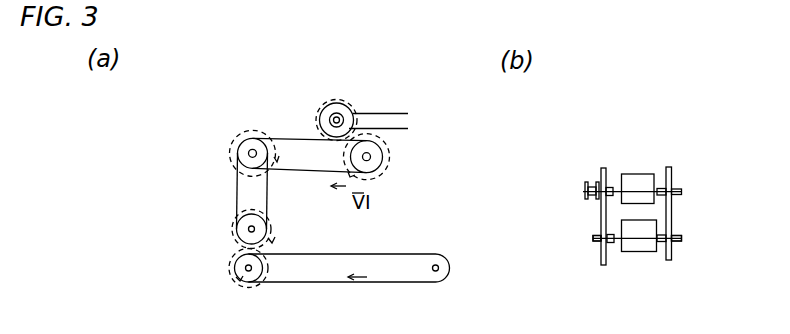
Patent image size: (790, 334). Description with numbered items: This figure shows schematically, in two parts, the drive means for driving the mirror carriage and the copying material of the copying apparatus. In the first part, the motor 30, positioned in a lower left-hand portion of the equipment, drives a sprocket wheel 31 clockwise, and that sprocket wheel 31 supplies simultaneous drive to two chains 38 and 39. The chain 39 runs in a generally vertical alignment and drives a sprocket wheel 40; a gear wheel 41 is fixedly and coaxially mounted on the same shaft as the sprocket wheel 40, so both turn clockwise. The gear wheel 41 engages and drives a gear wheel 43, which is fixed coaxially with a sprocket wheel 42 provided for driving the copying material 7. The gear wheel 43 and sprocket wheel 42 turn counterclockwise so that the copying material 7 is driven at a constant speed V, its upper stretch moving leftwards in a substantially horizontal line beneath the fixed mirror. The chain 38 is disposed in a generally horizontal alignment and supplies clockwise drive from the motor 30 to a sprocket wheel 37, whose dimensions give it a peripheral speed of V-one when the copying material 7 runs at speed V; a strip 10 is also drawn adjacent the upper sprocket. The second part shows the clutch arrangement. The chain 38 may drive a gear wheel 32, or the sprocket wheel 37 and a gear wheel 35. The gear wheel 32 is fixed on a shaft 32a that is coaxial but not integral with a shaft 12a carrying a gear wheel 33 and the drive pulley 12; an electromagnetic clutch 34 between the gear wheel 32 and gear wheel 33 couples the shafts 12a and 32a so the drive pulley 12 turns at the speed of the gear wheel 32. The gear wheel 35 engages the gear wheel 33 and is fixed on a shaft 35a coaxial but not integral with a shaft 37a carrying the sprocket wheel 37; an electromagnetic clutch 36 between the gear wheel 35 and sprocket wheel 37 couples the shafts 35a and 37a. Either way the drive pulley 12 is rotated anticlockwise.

The copying material 7 is at (352, 253).
The strip material 10 is at (392, 113).
The drive pulley 12 is at (338, 117).
The shaft 12a is at (609, 189).
The motor 30 is at (252, 131).
The sprocket wheel 31 is at (239, 151).
The gear wheel 32 is at (331, 106).
The shaft 32a is at (660, 184).
The gear wheel 33 is at (317, 123).
The electromagnetic clutch 34 is at (639, 183).
The gear wheel 35 is at (379, 176).
The shaft 35a is at (615, 244).
The electromagnetic clutch 36 is at (643, 243).
The sprocket wheel 37 is at (382, 154).
The shaft 37a is at (663, 248).
The chain 38 is at (320, 173).
The chain 39 is at (237, 193).
The sprocket wheel 40 is at (243, 238).
The gear wheel 41 is at (271, 222).
The sprocket wheel 42 is at (246, 279).
The gear wheel 43 is at (265, 278).